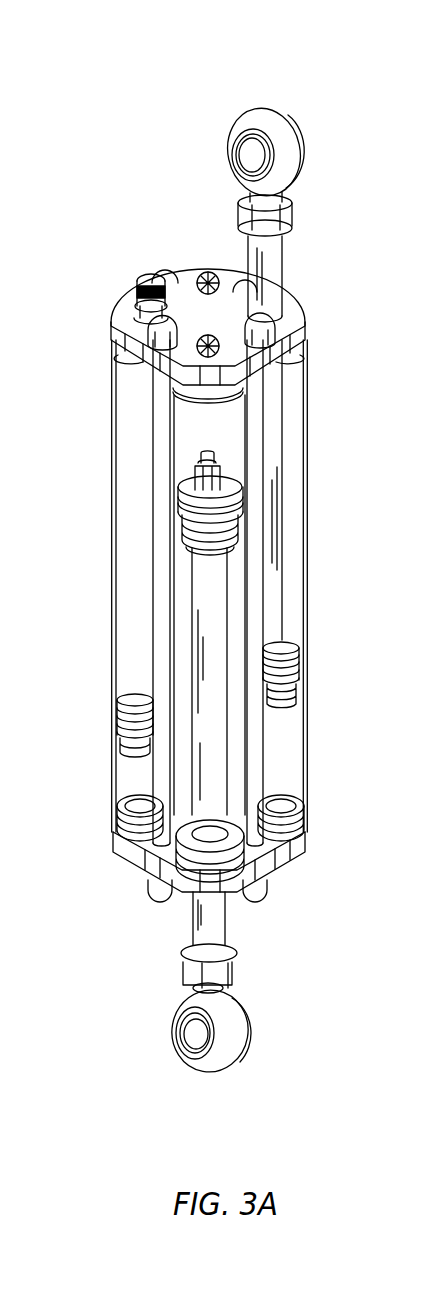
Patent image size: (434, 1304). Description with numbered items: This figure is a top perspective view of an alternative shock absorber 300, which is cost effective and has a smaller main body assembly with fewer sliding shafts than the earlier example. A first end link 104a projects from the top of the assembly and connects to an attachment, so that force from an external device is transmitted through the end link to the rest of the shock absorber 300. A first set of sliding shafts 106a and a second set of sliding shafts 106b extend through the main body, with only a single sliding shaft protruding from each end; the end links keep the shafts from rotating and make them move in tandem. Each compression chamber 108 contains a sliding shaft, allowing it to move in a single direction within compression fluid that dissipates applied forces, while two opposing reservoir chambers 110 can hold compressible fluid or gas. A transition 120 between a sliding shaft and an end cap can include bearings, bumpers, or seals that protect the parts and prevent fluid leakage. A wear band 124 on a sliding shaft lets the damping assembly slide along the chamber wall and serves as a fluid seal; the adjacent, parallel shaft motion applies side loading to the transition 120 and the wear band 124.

The shock absorber 300 is at (128, 82).
The first end link 104a is at (290, 223).
The first set of sliding shafts 106a is at (276, 441).
The second set of sliding shafts 106b is at (212, 603).
The compression chamber 108 is at (190, 433).
The reservoir chamber 110 is at (125, 562).
The transition 120 is at (304, 812).
The wear band 124 is at (296, 689).